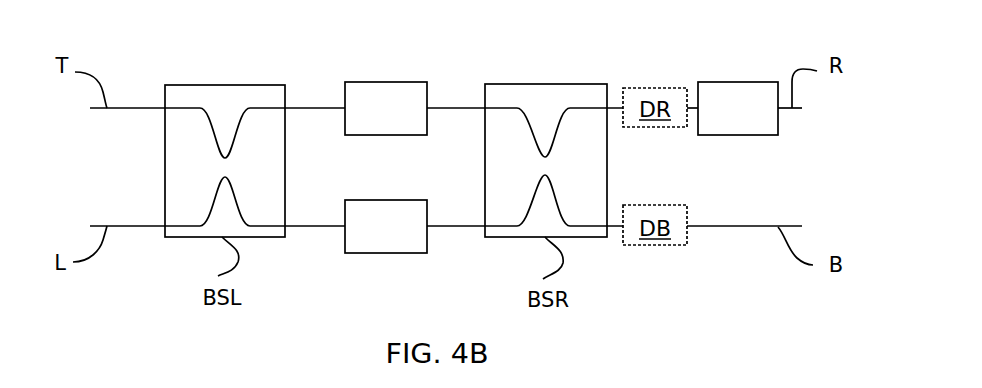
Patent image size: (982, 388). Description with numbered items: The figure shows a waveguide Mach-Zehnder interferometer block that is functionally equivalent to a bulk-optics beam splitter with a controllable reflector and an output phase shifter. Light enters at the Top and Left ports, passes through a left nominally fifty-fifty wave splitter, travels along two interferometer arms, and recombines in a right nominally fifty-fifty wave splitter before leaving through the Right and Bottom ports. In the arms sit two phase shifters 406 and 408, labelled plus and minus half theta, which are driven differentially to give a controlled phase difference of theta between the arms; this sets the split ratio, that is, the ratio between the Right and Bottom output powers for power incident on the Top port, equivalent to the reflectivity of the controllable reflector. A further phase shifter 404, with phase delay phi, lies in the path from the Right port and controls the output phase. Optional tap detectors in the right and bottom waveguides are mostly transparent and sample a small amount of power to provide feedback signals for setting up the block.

The phase shifter 404 is at (732, 81).
The phase shifter 406 is at (385, 81).
The phase shifter 408 is at (385, 253).